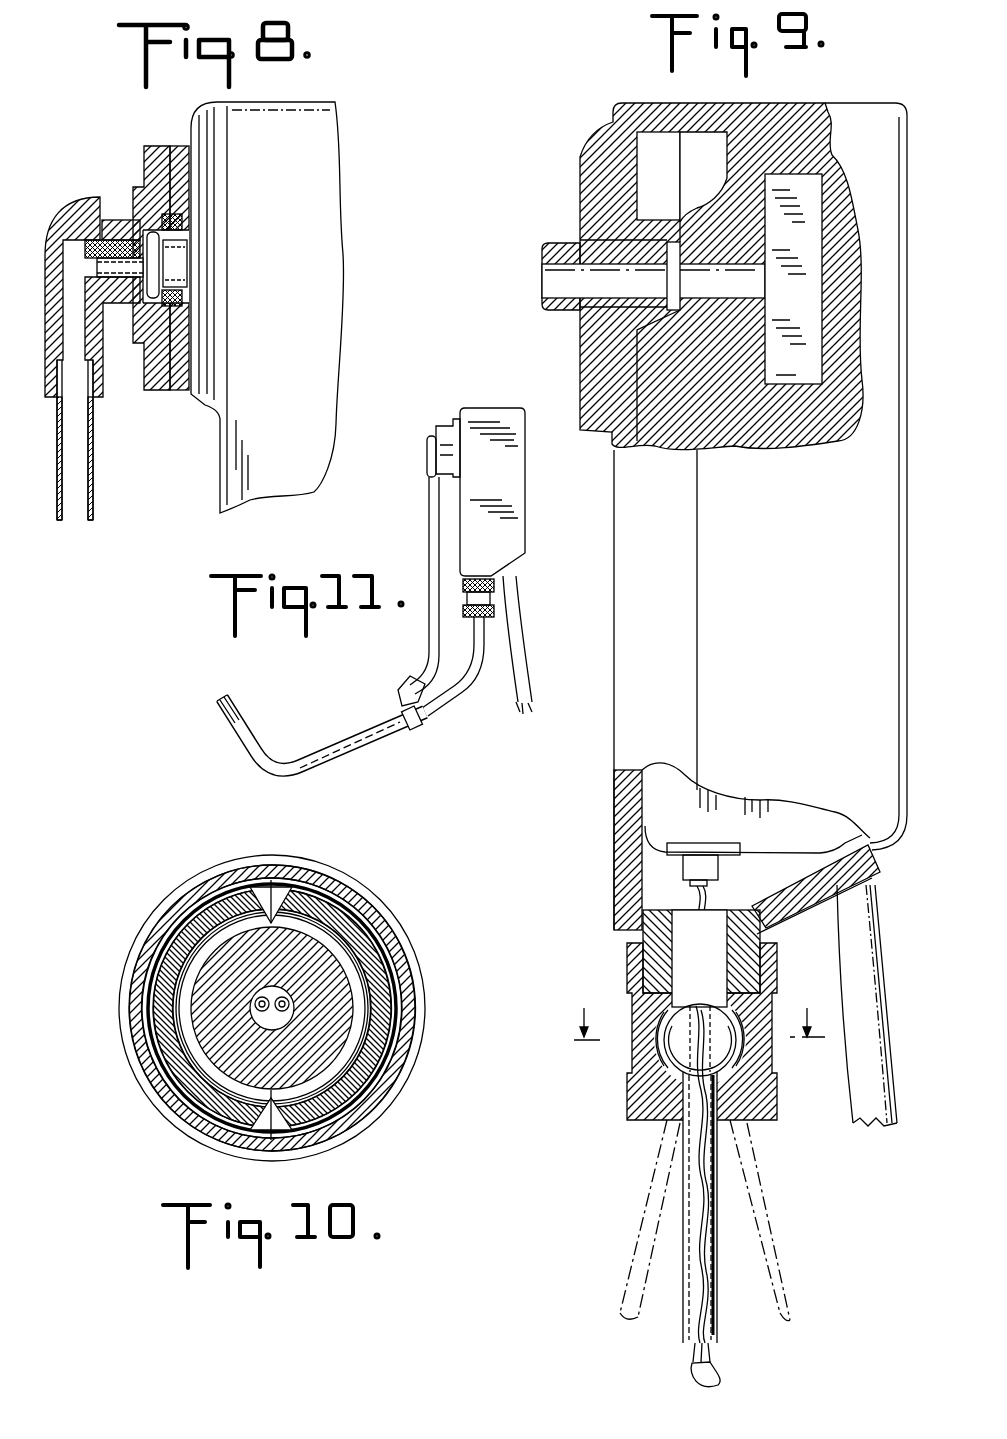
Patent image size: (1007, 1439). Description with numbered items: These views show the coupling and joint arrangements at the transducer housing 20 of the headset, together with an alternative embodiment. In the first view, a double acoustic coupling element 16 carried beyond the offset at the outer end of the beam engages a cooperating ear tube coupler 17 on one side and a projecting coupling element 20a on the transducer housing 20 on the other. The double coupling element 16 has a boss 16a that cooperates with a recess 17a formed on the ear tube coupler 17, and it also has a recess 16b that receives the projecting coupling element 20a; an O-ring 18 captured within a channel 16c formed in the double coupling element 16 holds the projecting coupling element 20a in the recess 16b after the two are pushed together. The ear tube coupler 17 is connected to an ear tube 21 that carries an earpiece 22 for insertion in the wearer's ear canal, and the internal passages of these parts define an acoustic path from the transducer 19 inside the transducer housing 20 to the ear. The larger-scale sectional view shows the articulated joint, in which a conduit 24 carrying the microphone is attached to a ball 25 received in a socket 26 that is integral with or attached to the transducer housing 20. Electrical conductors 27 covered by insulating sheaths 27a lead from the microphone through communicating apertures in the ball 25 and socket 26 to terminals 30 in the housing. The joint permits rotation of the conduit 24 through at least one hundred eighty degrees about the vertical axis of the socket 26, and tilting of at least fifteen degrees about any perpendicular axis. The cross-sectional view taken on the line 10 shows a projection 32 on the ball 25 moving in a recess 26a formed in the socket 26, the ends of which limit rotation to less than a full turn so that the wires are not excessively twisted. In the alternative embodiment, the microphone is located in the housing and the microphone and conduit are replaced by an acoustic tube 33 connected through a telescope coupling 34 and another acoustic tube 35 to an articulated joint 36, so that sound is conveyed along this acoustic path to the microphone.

In FIG. 9, the section line 10- 10 is at (696, 1004).
In FIG. 8, the double acoustic coupling element 16 is at (157, 155).
In FIG. 8, the boss 16a is at (123, 225).
In FIG. 8, the recess 16b is at (144, 222).
In FIG. 8, the channel 16c is at (190, 315).
In FIG. 8, the ear tube coupler 17 is at (64, 225).
In FIG. 8, the recess 17a is at (115, 300).
In FIG. 8, the O-ring 18 is at (176, 146).
In FIG. 9, the transducer 19 is at (793, 182).
In FIG. 8, the transducer housing 20 is at (312, 131).
In FIG. 9, the transducer housing 20 is at (721, 548).
In FIG. 11, the transducer housing 20 is at (484, 423).
In FIG. 8, the projecting coupling element 20a is at (172, 267).
In FIG. 9, the projecting coupling element 20a is at (565, 250).
In FIG. 8, the ear tube 21 is at (57, 487).
In FIG. 11, the ear tube 21 is at (430, 507).
In FIG. 11, the earpiece 22 is at (398, 690).
In FIG. 9, the conduit 24 is at (716, 1328).
In FIG. 9, the ball 25 is at (655, 1059).
In FIG. 10, the ball 25 is at (218, 1040).
In FIG. 9, the socket 26 is at (650, 963).
In FIG. 10, the socket 26 is at (192, 927).
In FIG. 10, the recess 26a is at (165, 975).
In FIG. 9, the electrical conductors 27 is at (716, 1388).
In FIG. 9, the insulating sheaths 27a is at (690, 1362).
In FIG. 9, the terminals 30 is at (650, 808).
In FIG. 9, the projection 32 is at (676, 1045).
In FIG. 10, the projection 32 is at (190, 1013).
In FIG. 11, the acoustic tube 33 is at (247, 751).
In FIG. 11, the telescope coupling 34 is at (396, 736).
In FIG. 11, the acoustic tube 35 is at (454, 710).
In FIG. 9, the articulated joint 36 is at (626, 1099).
In FIG. 10, the articulated joint 36 is at (170, 1105).
In FIG. 11, the articulated joint 36 is at (470, 598).